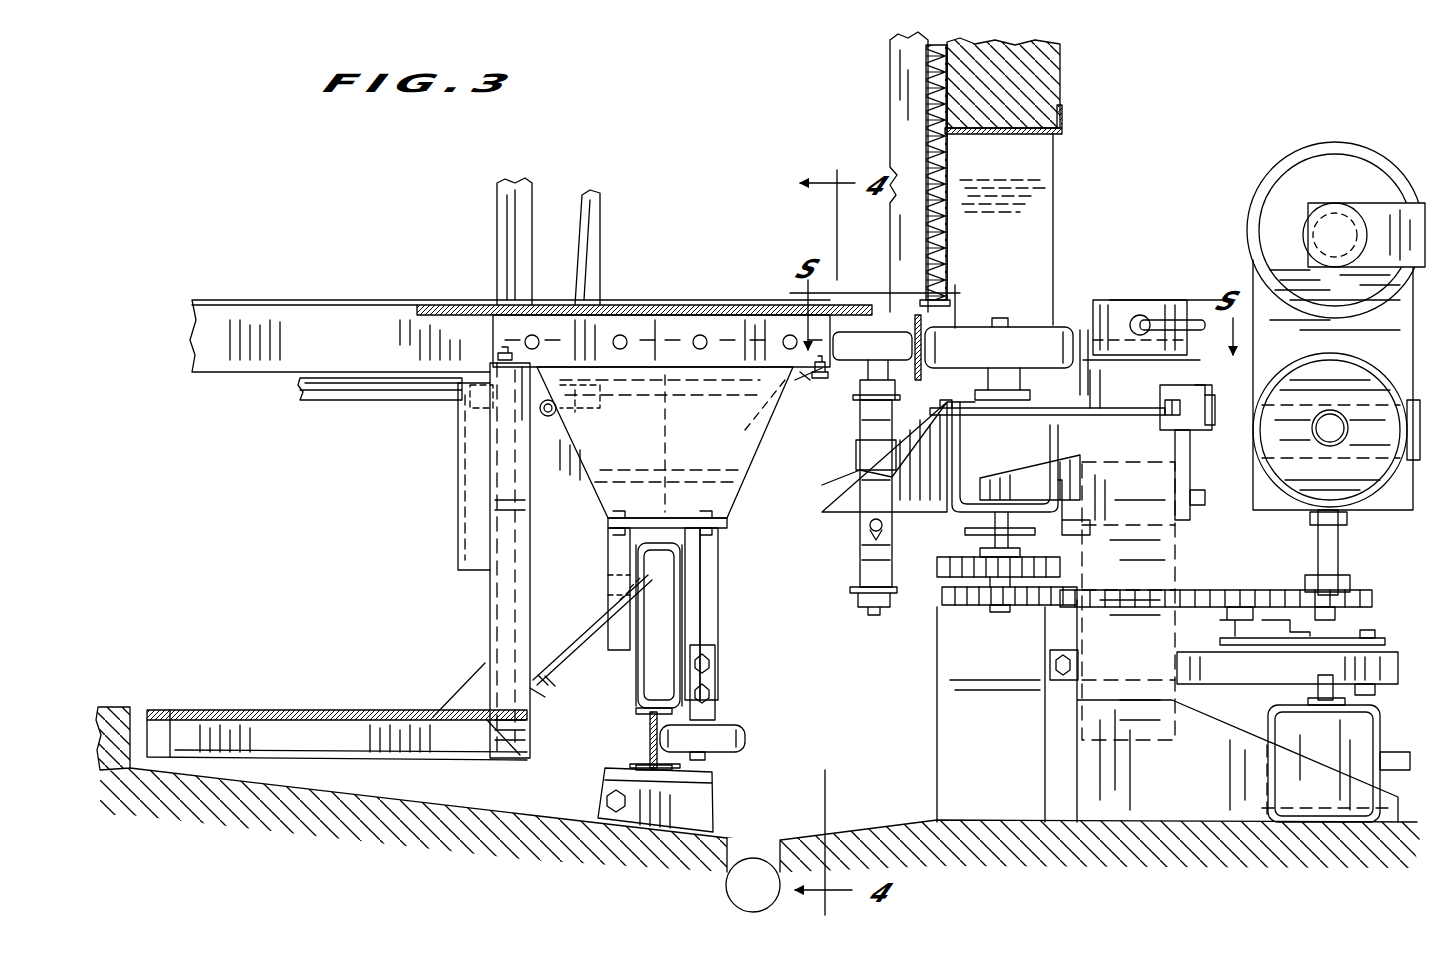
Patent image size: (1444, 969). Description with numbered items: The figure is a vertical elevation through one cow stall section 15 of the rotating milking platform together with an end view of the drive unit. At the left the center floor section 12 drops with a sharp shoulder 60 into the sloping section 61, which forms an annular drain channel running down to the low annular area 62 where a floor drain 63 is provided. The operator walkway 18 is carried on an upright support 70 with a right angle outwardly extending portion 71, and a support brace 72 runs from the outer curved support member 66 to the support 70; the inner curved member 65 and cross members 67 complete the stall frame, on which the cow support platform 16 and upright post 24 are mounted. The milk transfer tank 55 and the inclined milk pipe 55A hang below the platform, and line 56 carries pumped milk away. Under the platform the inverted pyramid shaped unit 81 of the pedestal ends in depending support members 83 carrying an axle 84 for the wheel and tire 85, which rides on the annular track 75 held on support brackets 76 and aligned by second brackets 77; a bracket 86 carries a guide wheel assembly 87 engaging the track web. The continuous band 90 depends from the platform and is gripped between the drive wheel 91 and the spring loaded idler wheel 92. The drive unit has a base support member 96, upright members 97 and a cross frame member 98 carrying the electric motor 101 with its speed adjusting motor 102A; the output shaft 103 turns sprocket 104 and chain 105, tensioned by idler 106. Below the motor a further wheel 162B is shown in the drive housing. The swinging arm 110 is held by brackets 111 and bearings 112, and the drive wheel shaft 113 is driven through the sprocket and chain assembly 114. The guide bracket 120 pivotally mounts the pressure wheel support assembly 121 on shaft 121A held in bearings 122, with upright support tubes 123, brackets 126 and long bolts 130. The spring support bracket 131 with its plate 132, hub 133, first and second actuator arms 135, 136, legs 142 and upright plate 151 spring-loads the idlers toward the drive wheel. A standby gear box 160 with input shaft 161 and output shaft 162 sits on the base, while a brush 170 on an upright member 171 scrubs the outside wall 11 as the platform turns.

The outside wall 11 is at (1060, 85).
The center floor section 12 is at (115, 707).
The cow stall section 15 is at (680, 298).
The cow support platform 16 is at (745, 305).
The operator walkway 18 is at (290, 710).
The upright post 24 is at (580, 215).
The milk transfer tank 55 is at (458, 470).
The milk pipe 55A is at (350, 400).
The milk line 56 is at (505, 200).
The sharp shoulder 60 is at (160, 770).
The sloping floor section 61 is at (420, 800).
The low annular area 62 is at (765, 840).
The floor drain 63 is at (745, 883).
The curved support member 65 is at (495, 358).
The curved support member 66 is at (820, 378).
The cross member 67 is at (585, 305).
The walkway support 70 is at (512, 530).
The right angle outwardly extending portion 71 is at (330, 740).
The support brace 72 is at (585, 632).
The annular track 75 is at (648, 735).
The support bracket 76 is at (700, 800).
The second bracket 77 is at (625, 770).
The pyramid shaped unit 81 is at (665, 442).
The depending support member 83 is at (615, 540).
The axle 84 is at (712, 626).
The wheel and tire 85 is at (655, 660).
The bracket 86 is at (708, 695).
The guide wheel and tire assembly 87 is at (738, 738).
The band 90 is at (918, 312).
The drive wheel 91 is at (1010, 325).
The idler wheel 92 is at (870, 332).
The base support member 96 is at (1215, 800).
The upright member 97 is at (1150, 555).
The cross frame member 98 is at (1195, 505).
The electric motor 101 is at (1285, 190).
The electric motor drive 102A is at (1375, 225).
The output shaft 103 is at (1335, 556).
The sprocket 104 is at (1310, 578).
The chain 105 is at (1260, 590).
The spring loaded idler 106 is at (1320, 627).
The swinging arm assembly 110 is at (1080, 470).
The bracket 111 is at (1068, 535).
The bearing 112 is at (965, 495).
The shaft 113 is at (1015, 318).
The sprocket and chain assembly 114 is at (948, 555).
The guide bracket 120 is at (822, 490).
The pressure wheel support assembly 121 is at (910, 590).
The shaft 121A is at (858, 600).
The bearing 122 is at (856, 522).
The upright support tube 123 is at (865, 430).
The bracket 126 is at (870, 455).
The long bolt 130 is at (1105, 418).
The spring member support bracket 131 is at (1082, 330).
The horizontal support plate 132 is at (1130, 320).
The hub 133 is at (1205, 395).
The first actuator arm 135 is at (1215, 388).
The second actuator arm 136 is at (1250, 335).
The leg 142 is at (1188, 440).
The upright plate 151 is at (1176, 300).
The standby gear box 160 is at (1300, 732).
The input shaft 161 is at (1400, 770).
The output shaft 162 is at (1318, 690).
The wheel 162B is at (1340, 432).
The brush 170 is at (936, 60).
The upright member 171 is at (905, 95).